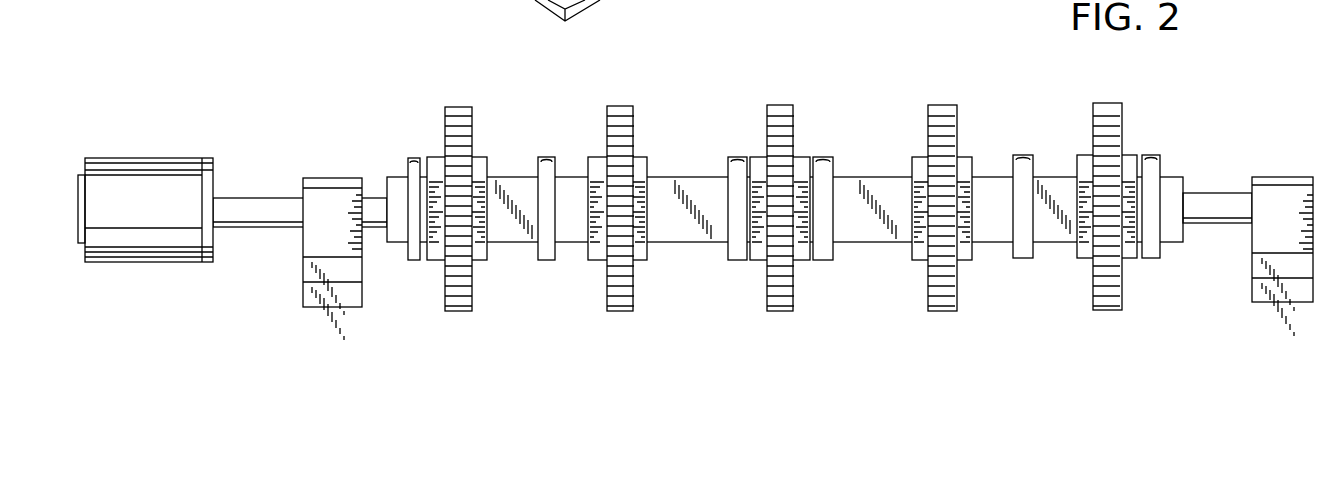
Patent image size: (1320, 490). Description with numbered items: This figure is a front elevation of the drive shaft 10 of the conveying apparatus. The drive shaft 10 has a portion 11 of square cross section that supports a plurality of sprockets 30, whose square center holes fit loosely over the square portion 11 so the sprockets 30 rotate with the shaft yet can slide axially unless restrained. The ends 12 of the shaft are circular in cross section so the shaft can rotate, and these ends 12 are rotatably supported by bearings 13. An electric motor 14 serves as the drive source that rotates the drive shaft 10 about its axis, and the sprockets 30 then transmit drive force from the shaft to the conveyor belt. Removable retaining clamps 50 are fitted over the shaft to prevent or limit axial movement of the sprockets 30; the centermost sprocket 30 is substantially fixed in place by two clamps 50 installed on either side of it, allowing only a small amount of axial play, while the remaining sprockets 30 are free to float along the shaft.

The drive shaft 10 is at (1212, 197).
The square portion 11 is at (508, 232).
The ends 12 is at (248, 203).
The bearings 13 is at (330, 178).
The electric motor 14 is at (160, 162).
The sprockets 30 is at (458, 107).
The retaining clamps 50 is at (546, 158).